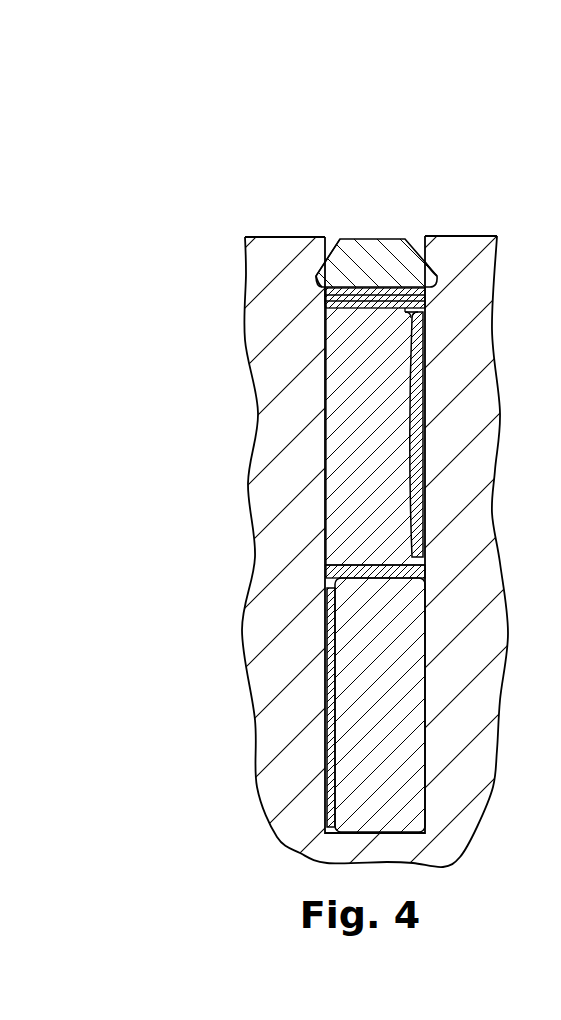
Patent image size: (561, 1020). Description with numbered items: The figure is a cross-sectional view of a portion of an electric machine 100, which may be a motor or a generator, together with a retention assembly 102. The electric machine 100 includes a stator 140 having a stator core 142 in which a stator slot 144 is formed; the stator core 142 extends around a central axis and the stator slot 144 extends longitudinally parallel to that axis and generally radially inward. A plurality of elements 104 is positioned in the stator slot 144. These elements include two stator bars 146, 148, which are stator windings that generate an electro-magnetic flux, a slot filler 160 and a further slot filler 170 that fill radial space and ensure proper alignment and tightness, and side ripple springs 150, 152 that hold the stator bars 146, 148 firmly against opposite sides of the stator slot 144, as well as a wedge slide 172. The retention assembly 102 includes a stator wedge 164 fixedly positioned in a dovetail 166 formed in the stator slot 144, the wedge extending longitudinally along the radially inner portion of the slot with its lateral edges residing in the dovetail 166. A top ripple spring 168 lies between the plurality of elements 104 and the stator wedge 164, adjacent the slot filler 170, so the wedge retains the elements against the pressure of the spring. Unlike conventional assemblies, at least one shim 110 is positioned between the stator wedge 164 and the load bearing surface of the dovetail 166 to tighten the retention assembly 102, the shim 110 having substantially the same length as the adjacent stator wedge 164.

The electric machine 100 is at (453, 148).
The retention assembly 102 is at (330, 508).
The plurality of elements 104 is at (280, 531).
The shim 110 is at (315, 280).
The stator 140 is at (240, 170).
The stator core 142 is at (273, 435).
The stator slot 144 is at (416, 236).
The stator bar 146 is at (345, 740).
The stator bar 148 is at (333, 542).
The side ripple spring 150 is at (327, 672).
The side ripple spring 152 is at (482, 433).
The slot filler 160 is at (333, 573).
The stator wedge 164 is at (320, 273).
The dovetail 166 is at (430, 268).
The top ripple spring 168 is at (304, 287).
The slot filler 170 is at (425, 310).
The wedge slide 172 is at (425, 296).